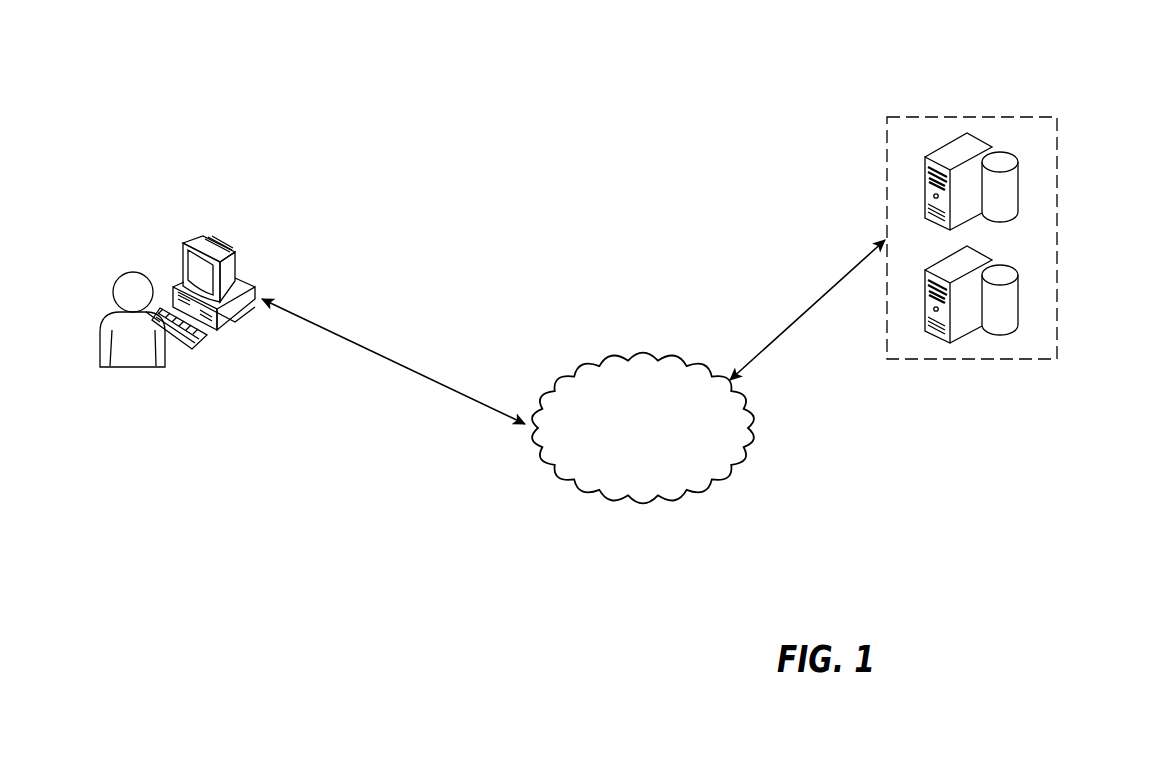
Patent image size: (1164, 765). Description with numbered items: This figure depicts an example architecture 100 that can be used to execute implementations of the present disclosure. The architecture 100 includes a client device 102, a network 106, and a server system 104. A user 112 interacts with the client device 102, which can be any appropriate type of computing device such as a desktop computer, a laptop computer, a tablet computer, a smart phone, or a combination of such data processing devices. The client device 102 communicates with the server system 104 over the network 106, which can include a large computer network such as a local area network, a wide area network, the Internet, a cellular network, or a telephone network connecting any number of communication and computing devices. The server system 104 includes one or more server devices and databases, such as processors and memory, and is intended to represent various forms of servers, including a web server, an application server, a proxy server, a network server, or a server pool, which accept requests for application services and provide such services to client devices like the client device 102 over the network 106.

The example architecture 100 is at (491, 112).
The client device 102 is at (183, 249).
The server system 104 is at (1057, 238).
The network 106 is at (643, 351).
The user 112 is at (133, 367).